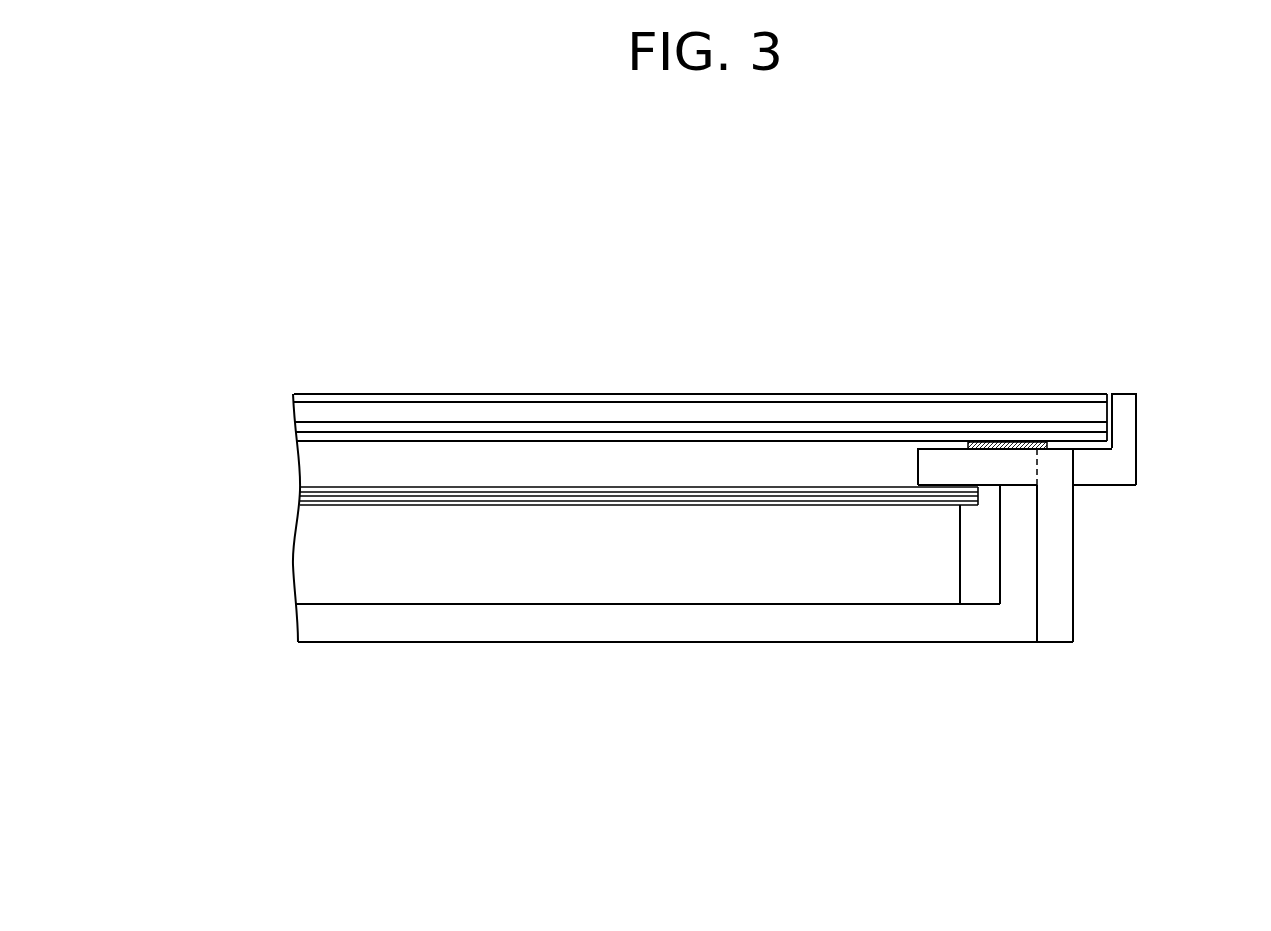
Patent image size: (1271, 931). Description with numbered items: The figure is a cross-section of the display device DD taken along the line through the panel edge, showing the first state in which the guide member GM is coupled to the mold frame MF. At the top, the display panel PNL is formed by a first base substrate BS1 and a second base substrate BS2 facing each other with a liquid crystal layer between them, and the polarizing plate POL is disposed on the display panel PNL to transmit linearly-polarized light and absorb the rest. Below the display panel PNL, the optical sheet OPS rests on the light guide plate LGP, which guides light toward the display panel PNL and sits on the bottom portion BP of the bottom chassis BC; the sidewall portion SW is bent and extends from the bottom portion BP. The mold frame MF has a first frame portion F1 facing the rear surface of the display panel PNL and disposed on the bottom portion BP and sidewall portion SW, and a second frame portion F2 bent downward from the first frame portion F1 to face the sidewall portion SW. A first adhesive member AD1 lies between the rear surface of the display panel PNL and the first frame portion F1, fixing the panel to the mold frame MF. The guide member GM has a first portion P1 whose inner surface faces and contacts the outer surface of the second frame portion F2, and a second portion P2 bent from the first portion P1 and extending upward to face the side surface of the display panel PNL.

The display device DD is at (873, 284).
The display panel PNL is at (195, 403).
The polarizing plate POL is at (307, 398).
The second base substrate BS2 is at (307, 413).
The first base substrate BS1 is at (307, 435).
The first adhesive member AD1 is at (1008, 448).
The guide member GM is at (1212, 402).
The second portion P2 is at (1130, 422).
The first portion P1 is at (1103, 473).
The optical sheet OPS is at (293, 495).
The light guide plate LGP is at (308, 560).
The mold frame MF is at (1212, 542).
The first frame portion F1 is at (990, 487).
The second frame portion F2 is at (1053, 613).
The bottom chassis BC is at (1003, 717).
The bottom portion BP is at (925, 633).
The sidewall portion SW is at (1000, 577).